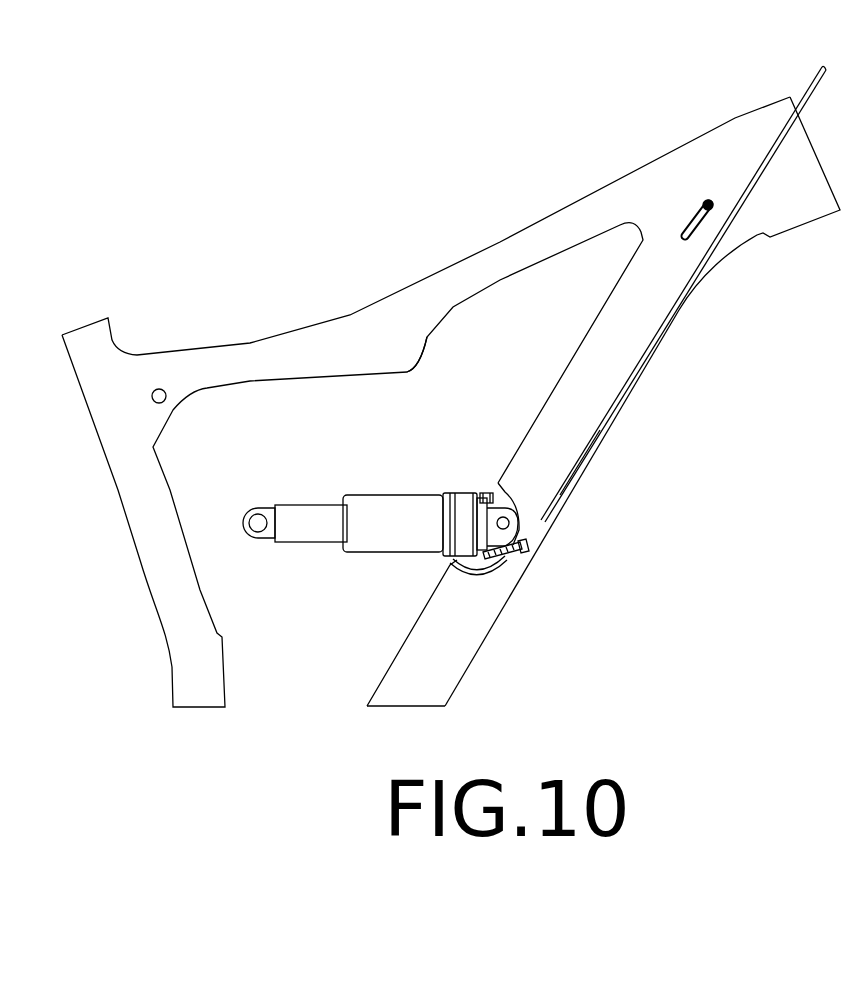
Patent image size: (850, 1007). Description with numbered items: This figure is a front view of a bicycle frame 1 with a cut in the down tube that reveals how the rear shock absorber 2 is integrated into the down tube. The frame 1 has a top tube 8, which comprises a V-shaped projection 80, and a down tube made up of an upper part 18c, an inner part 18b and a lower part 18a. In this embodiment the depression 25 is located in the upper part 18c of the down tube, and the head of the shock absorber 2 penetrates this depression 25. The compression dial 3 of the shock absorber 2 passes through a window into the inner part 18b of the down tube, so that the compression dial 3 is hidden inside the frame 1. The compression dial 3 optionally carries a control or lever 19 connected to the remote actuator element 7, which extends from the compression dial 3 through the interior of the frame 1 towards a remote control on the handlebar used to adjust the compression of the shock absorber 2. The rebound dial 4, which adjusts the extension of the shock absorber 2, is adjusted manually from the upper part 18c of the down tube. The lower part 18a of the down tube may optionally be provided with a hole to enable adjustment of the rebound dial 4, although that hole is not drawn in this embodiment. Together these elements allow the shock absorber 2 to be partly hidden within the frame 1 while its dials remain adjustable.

The frame 1 is at (148, 118).
The shock absorber 2 is at (385, 522).
The compression dial 3 is at (500, 565).
The rebound dial 4 is at (485, 493).
The actuator element 7 is at (590, 445).
The top tube 8 is at (497, 268).
The lower part of the down tube 18a is at (665, 340).
The inner part of the down tube 18b is at (440, 638).
The upper part of the down tube 18c is at (562, 375).
The lever 19 is at (524, 550).
The depression 25 is at (477, 575).
The V-shaped projection 80 is at (407, 365).